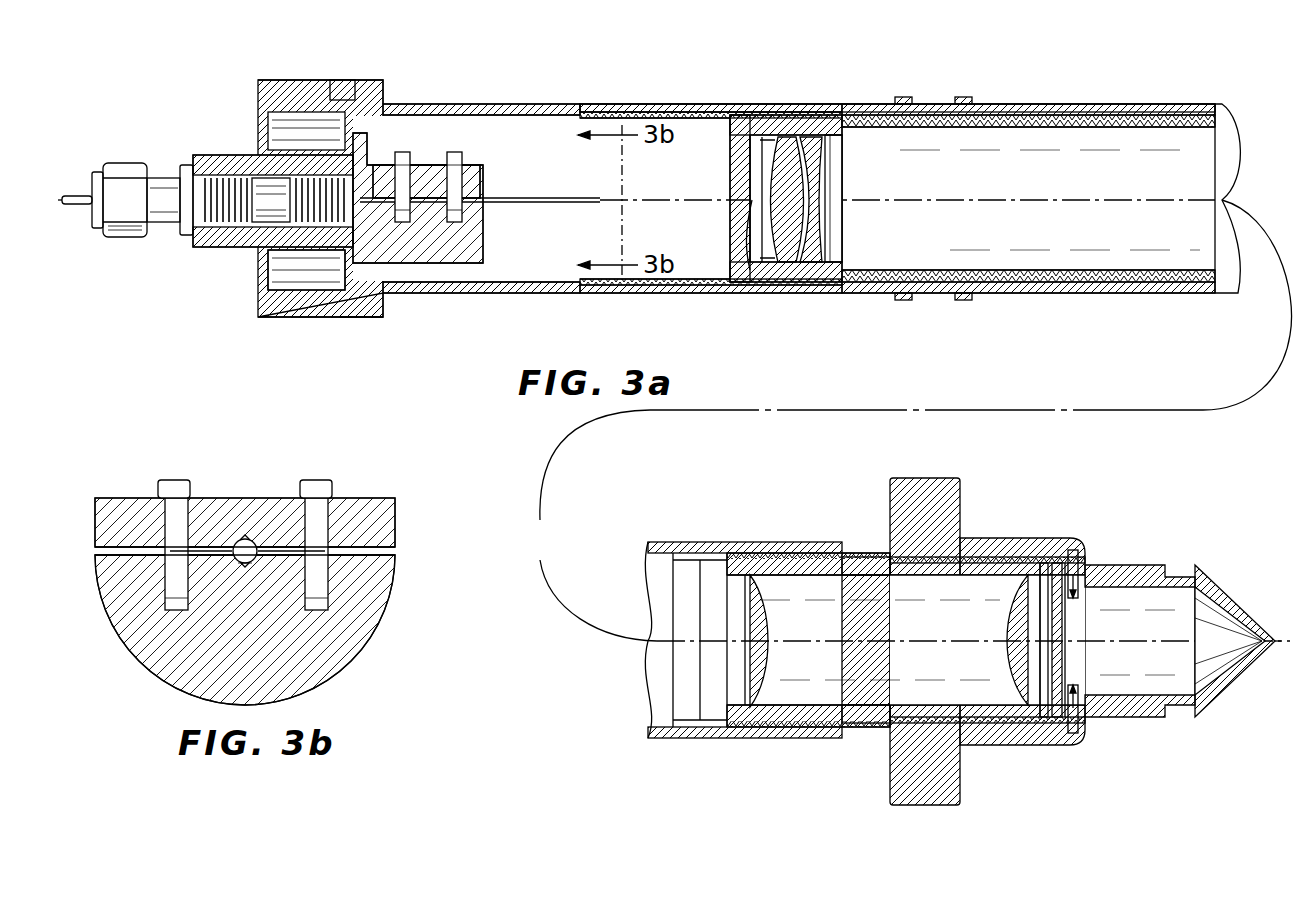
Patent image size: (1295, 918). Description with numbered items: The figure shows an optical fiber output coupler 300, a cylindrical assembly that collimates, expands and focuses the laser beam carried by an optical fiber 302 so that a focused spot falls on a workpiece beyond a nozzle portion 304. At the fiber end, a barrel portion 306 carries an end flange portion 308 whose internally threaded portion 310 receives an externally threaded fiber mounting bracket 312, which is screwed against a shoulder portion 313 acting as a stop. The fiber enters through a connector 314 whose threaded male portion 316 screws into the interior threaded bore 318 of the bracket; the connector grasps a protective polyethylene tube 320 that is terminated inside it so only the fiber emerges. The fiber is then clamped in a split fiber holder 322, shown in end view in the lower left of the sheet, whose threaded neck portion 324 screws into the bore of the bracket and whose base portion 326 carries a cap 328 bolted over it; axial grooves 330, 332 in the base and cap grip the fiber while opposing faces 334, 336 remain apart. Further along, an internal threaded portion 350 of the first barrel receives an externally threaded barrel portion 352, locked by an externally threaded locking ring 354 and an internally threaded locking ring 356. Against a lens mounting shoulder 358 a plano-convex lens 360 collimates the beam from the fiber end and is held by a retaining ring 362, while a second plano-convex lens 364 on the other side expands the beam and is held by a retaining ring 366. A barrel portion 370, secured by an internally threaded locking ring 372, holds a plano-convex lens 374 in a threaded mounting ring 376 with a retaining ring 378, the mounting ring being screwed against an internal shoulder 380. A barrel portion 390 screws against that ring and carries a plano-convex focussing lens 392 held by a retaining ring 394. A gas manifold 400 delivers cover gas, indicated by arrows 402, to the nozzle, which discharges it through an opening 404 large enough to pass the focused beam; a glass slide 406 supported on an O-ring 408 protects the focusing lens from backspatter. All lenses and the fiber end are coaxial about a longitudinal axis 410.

In FIG. 3a, the optical fiber output coupler 300 is at (970, 368).
In FIG. 3a, the optical fiber 302 is at (72, 196).
In FIG. 3b, the optical fiber 302 is at (251, 540).
In FIG. 3a, the nozzle portion 304 is at (1228, 600).
In FIG. 3a, the barrel portion 306 is at (548, 102).
In FIG. 3a, the end flange portion 308 is at (283, 90).
In FIG. 3a, the internally threaded portion 310 is at (343, 98).
In FIG. 3a, the fiber mounting bracket 312 is at (258, 105).
In FIG. 3a, the shoulder portion 313 is at (345, 317).
In FIG. 3a, the connector 314 is at (186, 168).
In FIG. 3a, the threaded male portion 316 is at (226, 180).
In FIG. 3a, the interior threaded bore 318 is at (270, 215).
In FIG. 3a, the protective polyethylene tube 320 is at (96, 230).
In FIG. 3a, the split fiber holder 322 is at (487, 172).
In FIG. 3b, the split fiber holder 322 is at (292, 466).
In FIG. 3a, the neck portion 324 is at (262, 275).
In FIG. 3a, the base portion 326 is at (442, 265).
In FIG. 3b, the base portion 326 is at (372, 650).
In FIG. 3a, the cap 328 is at (437, 165).
In FIG. 3b, the cap 328 is at (110, 498).
In FIG. 3b, the axial groove 330 is at (252, 566).
In FIG. 3b, the axial groove 332 is at (235, 545).
In FIG. 3b, the opposing face 334 is at (386, 553).
In FIG. 3b, the opposing face 336 is at (345, 550).
In FIG. 3a, the internal threaded portion 350 is at (732, 284).
In FIG. 3a, the externally threaded barrel portion 352 is at (948, 103).
In FIG. 3a, the externally threaded locking ring 354 is at (742, 126).
In FIG. 3a, the internally threaded locking ring 356 is at (903, 97).
In FIG. 3a, the lens mounting shoulder 358 is at (790, 136).
In FIG. 3a, the plano-convex lens 360 is at (772, 215).
In FIG. 3a, the retaining ring 362 is at (752, 252).
In FIG. 3a, the second plano-convex lens 364 is at (850, 134).
In FIG. 3a, the retaining ring 366 is at (845, 262).
In FIG. 3a, the barrel portion 370 is at (1068, 103).
In FIG. 3a, the internally threaded locking ring 372 is at (968, 97).
In FIG. 3a, the plano-convex lens 374 is at (776, 580).
In FIG. 3a, the threaded mounting ring 376 is at (795, 738).
In FIG. 3a, the retaining ring 378 is at (708, 727).
In FIG. 3a, the internal shoulder 380 is at (662, 580).
In FIG. 3a, the barrel portion 390 is at (855, 557).
In FIG. 3a, the plano-convex focussing lens 392 is at (1010, 560).
In FIG. 3a, the retaining ring 394 is at (1025, 660).
In FIG. 3a, the gas manifold 400 is at (965, 535).
In FIG. 3a, the arrows 402 is at (1077, 580).
In FIG. 3a, the opening 404 is at (1276, 652).
In FIG. 3a, the glass slide 406 is at (1066, 660).
In FIG. 3a, the O-ring 408 is at (1055, 735).
In FIG. 3a, the longitudinal axis 410 is at (1108, 200).